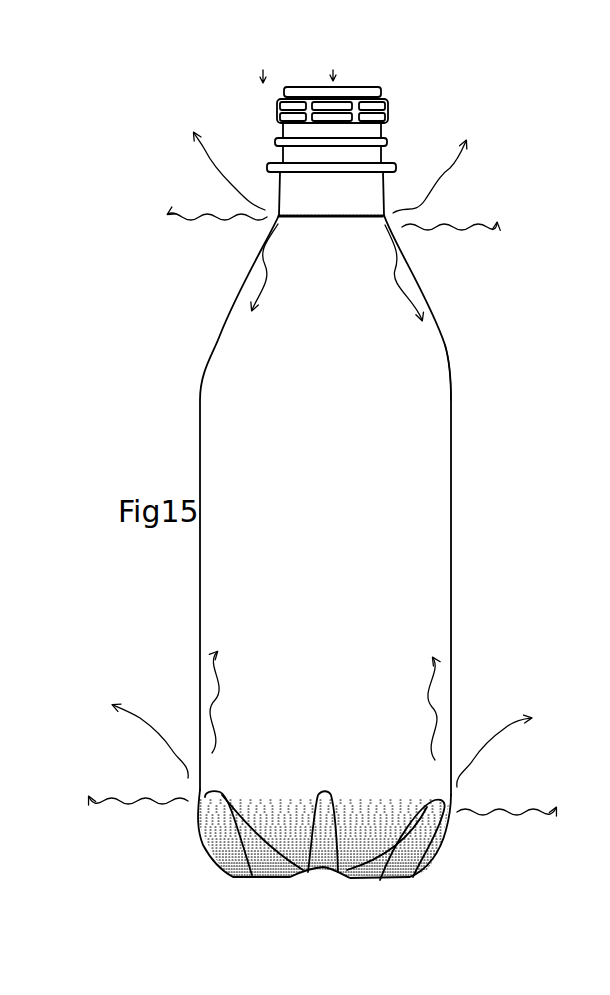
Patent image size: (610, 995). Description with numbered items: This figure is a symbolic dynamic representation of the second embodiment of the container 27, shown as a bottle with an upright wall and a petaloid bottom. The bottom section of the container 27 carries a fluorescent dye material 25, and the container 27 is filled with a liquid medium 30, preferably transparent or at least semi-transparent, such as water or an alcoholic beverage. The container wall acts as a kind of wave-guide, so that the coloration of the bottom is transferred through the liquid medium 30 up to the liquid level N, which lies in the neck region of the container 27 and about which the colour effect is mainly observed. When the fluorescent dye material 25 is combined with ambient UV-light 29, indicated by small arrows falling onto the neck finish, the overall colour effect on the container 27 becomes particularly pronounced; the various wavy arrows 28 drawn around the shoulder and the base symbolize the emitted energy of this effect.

The fluorescent dye material 25 is at (417, 858).
The container 27 is at (189, 346).
The heating/cooling flow arrows 28 is at (335, 474).
The ambient UV-light 29 is at (415, 83).
The liquid medium 30 is at (415, 365).
The liquid level N is at (352, 217).